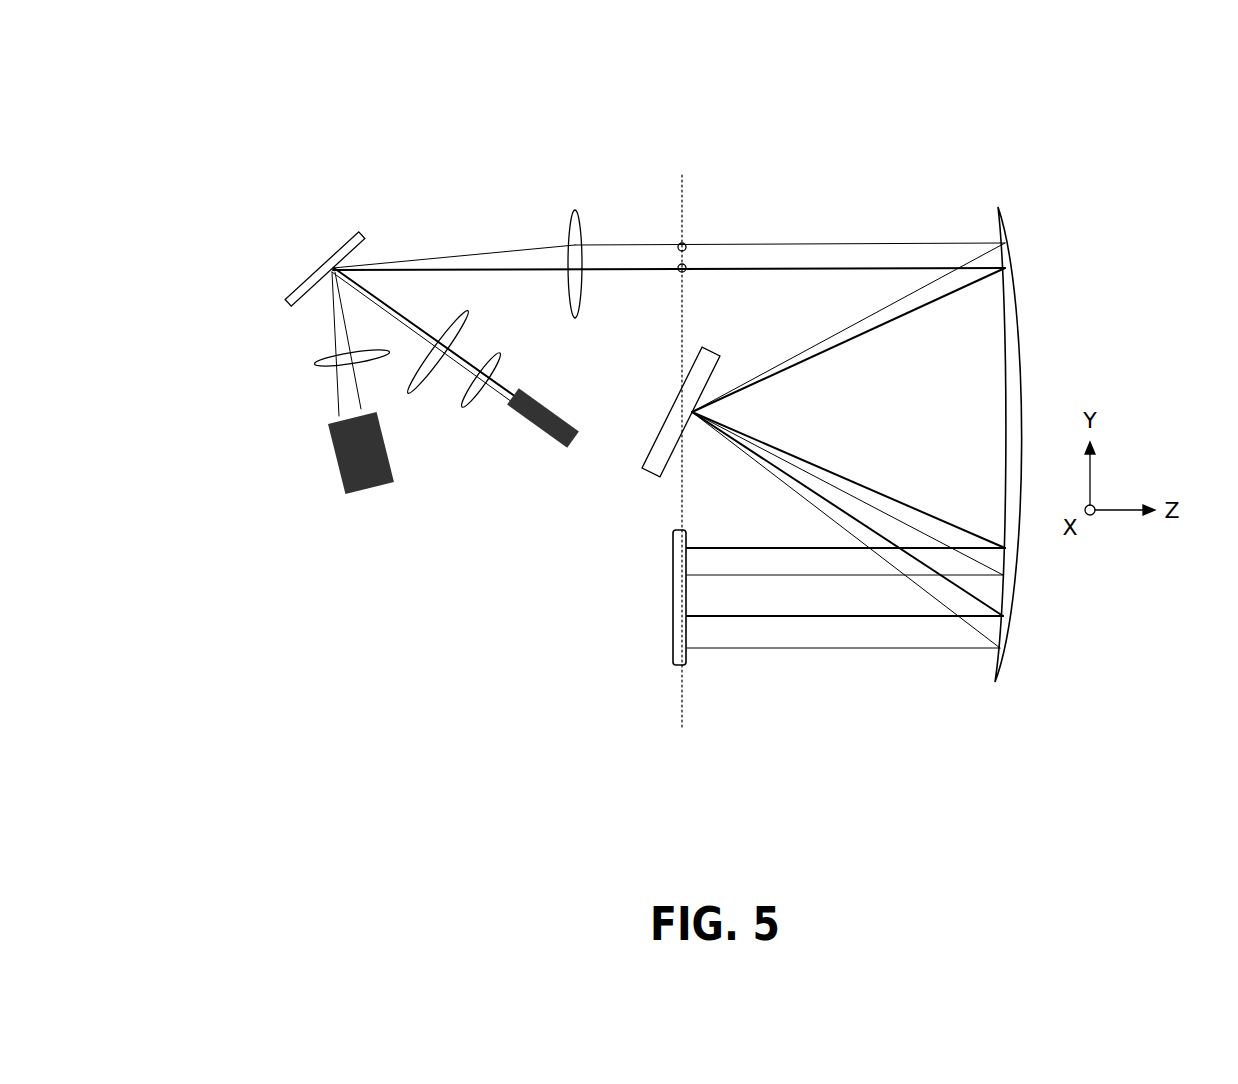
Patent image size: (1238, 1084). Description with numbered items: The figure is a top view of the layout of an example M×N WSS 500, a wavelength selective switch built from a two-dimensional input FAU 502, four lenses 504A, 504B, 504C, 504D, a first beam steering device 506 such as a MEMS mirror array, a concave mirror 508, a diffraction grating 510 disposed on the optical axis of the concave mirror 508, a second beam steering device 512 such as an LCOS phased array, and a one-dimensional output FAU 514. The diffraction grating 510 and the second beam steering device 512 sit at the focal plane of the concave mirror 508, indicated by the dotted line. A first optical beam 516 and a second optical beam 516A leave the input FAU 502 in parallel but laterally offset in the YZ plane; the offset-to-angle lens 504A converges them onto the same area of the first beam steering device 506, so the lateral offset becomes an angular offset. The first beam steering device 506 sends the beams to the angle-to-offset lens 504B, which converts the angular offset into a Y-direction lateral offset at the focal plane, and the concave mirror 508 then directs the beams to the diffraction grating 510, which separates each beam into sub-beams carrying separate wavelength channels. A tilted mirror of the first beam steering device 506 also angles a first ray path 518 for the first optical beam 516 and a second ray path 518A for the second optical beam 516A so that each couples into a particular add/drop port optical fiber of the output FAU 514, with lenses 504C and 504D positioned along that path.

The M×N WSS 500 is at (224, 78).
The 2D input FAU 502 is at (347, 497).
The lens 504A is at (340, 366).
The lens 504B is at (577, 207).
The lens 504C is at (426, 362).
The lens 504D is at (480, 398).
The first beam steering device 506 is at (363, 231).
The concave mirror 508 is at (1018, 330).
The diffraction grating 510 is at (653, 477).
The second beam steering device 512 is at (675, 580).
The 1D output FAU 514 is at (547, 403).
The first optical beam 516 is at (682, 265).
The second optical beam 516A is at (682, 244).
The first ray path 518 is at (470, 368).
The second ray path 518A is at (407, 325).